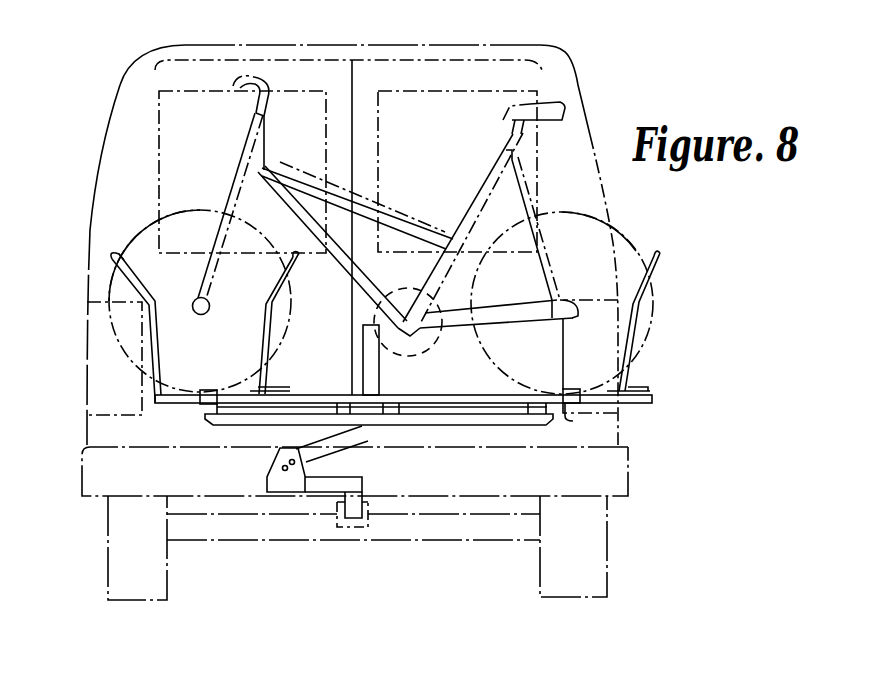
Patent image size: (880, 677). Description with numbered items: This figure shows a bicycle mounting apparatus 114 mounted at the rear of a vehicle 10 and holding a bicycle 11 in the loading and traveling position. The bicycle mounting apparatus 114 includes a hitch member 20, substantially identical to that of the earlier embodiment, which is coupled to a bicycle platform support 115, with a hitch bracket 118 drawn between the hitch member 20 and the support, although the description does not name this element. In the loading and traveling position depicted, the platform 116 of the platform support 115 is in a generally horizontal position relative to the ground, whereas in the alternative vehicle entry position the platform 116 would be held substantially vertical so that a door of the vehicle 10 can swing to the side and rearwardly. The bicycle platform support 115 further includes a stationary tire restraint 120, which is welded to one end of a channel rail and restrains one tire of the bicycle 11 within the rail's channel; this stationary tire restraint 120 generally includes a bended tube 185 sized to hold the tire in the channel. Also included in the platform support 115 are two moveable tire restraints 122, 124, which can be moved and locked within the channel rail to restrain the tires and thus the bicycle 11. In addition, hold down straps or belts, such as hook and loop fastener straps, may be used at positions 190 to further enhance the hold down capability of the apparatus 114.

The vehicle 10 is at (551, 52).
The bicycle 11 is at (394, 213).
The hitch member 20 is at (322, 486).
The bicycle mounting apparatus 114 is at (391, 474).
The bicycle platform support 115 is at (474, 433).
The platform 116 is at (652, 402).
The hitch bracket 118 is at (307, 438).
The stationary tire restraint 120 is at (162, 355).
The moveable tire restraint 122 is at (262, 320).
The moveable tire restraint 124 is at (632, 325).
The bended tube 185 is at (125, 273).
The positions for hold down straps 190 is at (203, 403).